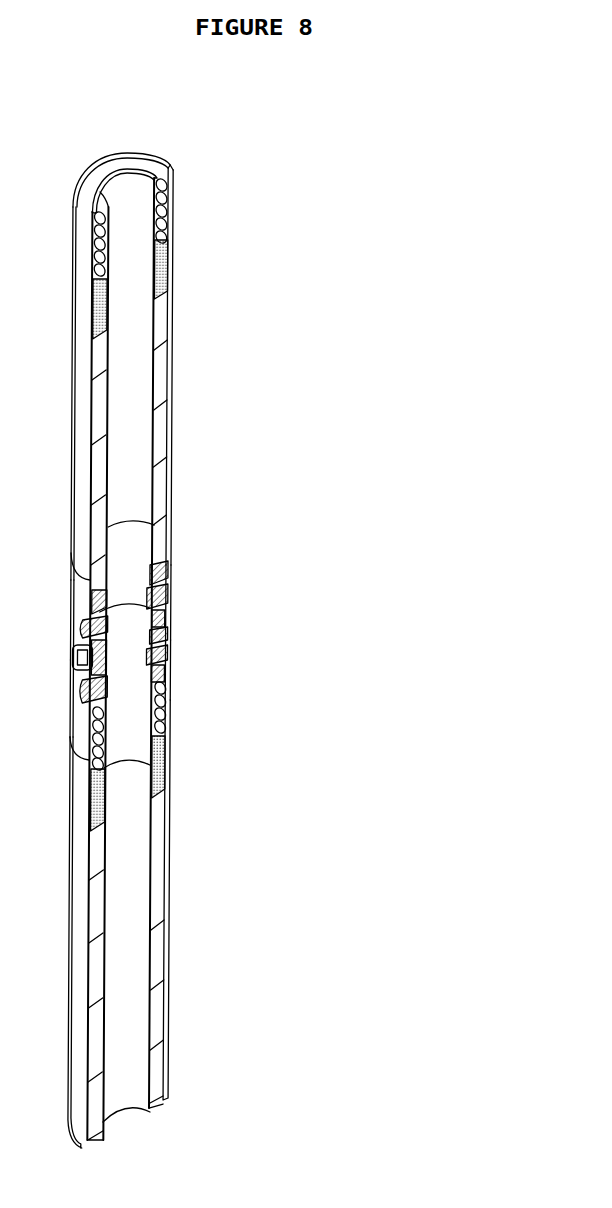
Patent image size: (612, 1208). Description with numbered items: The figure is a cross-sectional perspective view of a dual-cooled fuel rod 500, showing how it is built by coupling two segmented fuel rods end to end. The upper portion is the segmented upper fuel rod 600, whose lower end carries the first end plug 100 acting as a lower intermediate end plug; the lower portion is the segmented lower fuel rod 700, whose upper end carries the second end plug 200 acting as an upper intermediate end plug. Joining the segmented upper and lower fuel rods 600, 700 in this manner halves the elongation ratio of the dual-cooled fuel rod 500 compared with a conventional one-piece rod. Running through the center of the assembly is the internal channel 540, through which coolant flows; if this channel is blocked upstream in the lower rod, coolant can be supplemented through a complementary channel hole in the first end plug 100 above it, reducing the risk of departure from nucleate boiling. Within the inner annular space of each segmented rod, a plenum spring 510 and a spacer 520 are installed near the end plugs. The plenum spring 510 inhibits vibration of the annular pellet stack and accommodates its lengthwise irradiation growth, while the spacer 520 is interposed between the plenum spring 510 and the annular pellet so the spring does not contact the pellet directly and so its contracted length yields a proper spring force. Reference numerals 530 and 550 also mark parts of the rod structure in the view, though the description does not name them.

The first end plug 100 is at (181, 565).
The second end plug 200 is at (185, 657).
The dual-cooled fuel rod 500 is at (349, 305).
The plenum spring 510 is at (163, 198).
The spacer 520 is at (172, 258).
The tube body 530 is at (162, 328).
The internal channel 540 is at (141, 446).
The end cap 550 is at (154, 165).
The segmented upper fuel rod 600 is at (209, 382).
The segmented lower fuel rod 700 is at (206, 932).